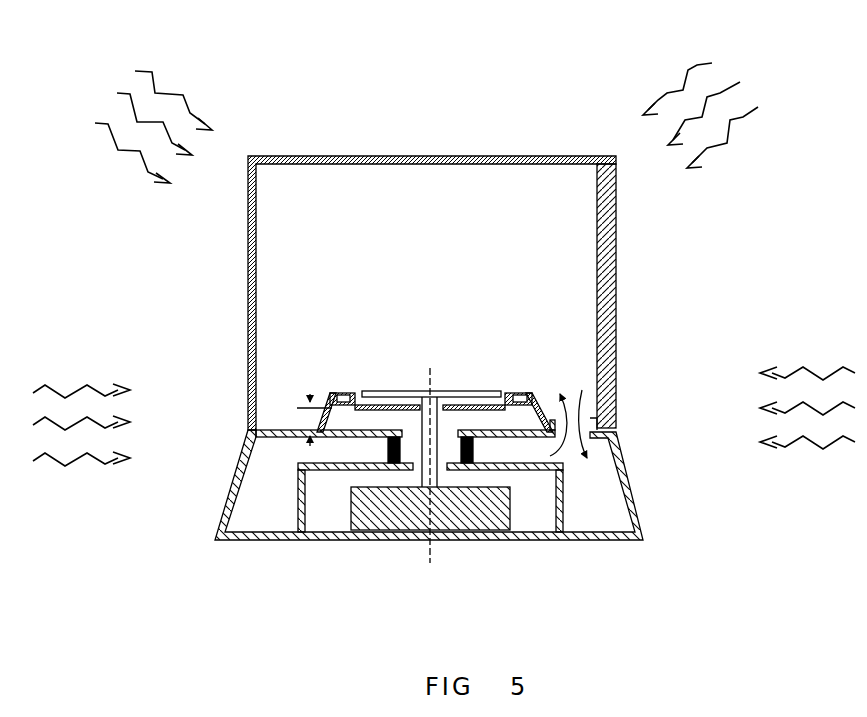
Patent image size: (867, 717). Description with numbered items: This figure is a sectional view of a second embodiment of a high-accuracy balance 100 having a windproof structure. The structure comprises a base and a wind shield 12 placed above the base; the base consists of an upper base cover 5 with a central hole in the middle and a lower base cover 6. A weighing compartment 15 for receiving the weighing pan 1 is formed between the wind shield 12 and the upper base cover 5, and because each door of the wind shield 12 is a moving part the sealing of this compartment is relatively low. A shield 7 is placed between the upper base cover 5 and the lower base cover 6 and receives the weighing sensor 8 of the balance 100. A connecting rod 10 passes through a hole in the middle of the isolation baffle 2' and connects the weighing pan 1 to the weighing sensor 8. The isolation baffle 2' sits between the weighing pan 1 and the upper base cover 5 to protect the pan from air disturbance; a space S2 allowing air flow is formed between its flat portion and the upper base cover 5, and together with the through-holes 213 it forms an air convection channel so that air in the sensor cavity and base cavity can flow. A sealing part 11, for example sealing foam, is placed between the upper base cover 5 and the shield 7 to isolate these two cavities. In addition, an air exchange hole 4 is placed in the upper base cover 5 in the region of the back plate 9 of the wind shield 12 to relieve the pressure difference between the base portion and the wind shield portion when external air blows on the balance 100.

The balance 100 is at (444, 126).
The wind shield 12 is at (248, 221).
The back plate 9 is at (612, 255).
The weighing compartment 15 is at (464, 264).
The lower base cover 6 is at (268, 535).
The upper base cover 5 is at (272, 433).
The space S2 is at (304, 420).
The sealing part 11 is at (389, 450).
The shield 7 is at (298, 495).
The weighing sensor 8 is at (392, 512).
The connecting rod 10 is at (438, 488).
The weighing pan 1 is at (415, 392).
The isolation baffle 2' is at (435, 392).
The through-holes 213 is at (343, 391).
The air exchange hole 4 is at (583, 432).